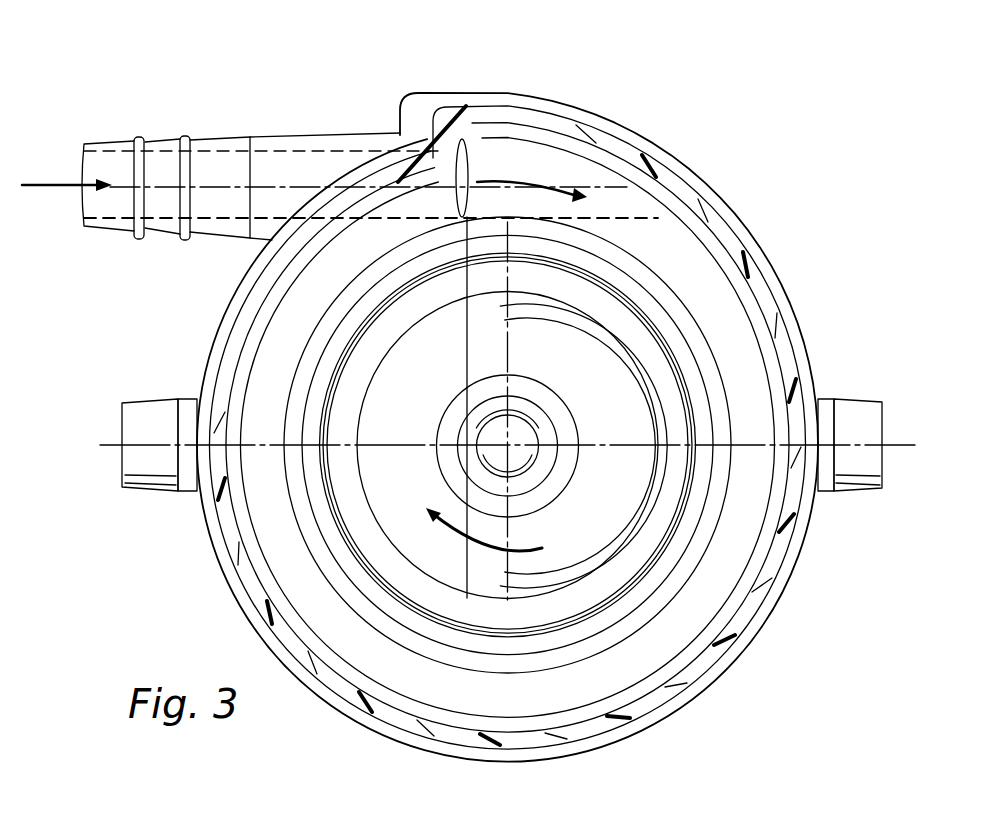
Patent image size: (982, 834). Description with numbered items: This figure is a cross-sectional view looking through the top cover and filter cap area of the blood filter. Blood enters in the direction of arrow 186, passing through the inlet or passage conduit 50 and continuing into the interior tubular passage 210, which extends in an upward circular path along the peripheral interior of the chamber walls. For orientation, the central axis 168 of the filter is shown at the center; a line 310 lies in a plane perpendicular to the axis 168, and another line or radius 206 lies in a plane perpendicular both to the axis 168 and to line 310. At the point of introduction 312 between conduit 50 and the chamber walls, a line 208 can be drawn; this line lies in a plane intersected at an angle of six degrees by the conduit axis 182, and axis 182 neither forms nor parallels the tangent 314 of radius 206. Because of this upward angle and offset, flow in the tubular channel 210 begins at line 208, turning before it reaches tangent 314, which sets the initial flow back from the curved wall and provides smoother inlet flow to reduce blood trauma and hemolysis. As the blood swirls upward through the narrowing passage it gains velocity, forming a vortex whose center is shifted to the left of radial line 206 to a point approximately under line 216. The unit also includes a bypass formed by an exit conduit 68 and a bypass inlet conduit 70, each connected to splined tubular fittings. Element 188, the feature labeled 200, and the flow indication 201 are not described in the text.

The inlet conduit 50 is at (297, 135).
The exit conduit 68 is at (175, 490).
The inlet conduit of bypass 70 is at (838, 492).
The central axis 168 is at (508, 447).
The conduit axis 182 is at (310, 187).
The arrow 186 is at (52, 180).
The impeller hub 188 is at (590, 558).
The housing outer wall 200 is at (548, 175).
The tangential flow direction 201 is at (480, 180).
The radius 206 is at (512, 370).
The line 208 is at (448, 368).
The tubular passage 210 is at (648, 213).
The line 216 is at (467, 515).
The line 310 is at (602, 418).
The point of introduction 312 is at (461, 140).
The tangent 314 is at (645, 216).